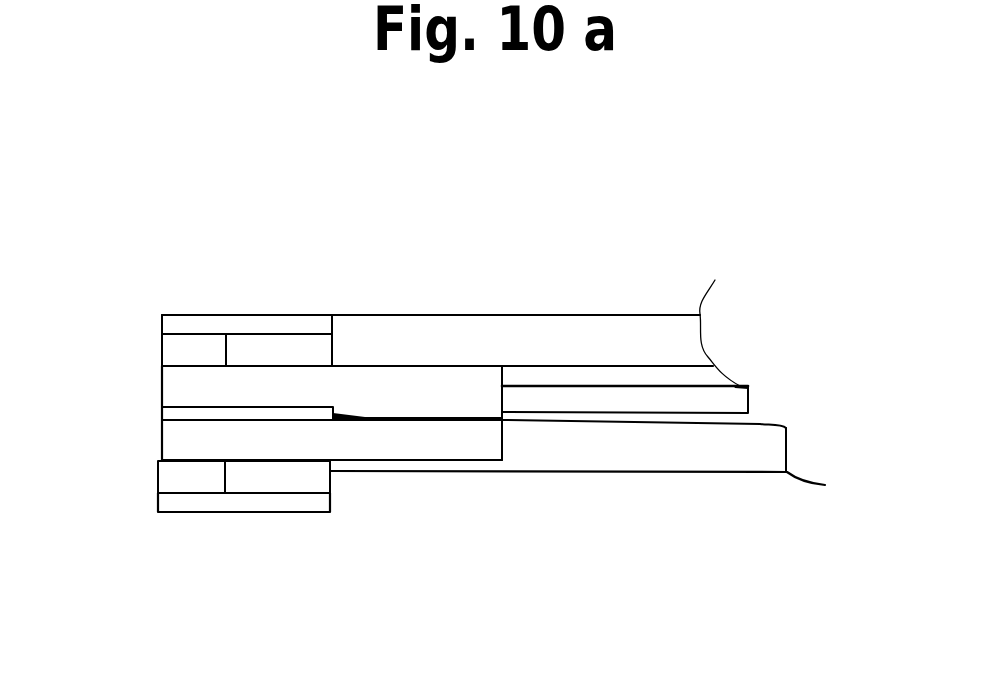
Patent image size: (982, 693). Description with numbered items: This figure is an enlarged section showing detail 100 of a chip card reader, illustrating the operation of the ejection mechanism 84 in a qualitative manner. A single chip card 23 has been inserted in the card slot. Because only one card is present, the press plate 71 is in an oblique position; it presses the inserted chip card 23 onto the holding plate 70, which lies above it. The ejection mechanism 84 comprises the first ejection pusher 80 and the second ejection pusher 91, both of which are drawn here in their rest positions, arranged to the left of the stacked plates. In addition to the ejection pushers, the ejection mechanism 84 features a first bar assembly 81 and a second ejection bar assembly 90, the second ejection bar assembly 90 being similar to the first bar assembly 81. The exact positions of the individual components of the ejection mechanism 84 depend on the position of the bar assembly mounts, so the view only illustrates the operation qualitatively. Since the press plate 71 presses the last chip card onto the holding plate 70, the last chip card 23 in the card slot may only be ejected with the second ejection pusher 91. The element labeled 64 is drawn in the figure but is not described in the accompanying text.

The detail 100 is at (547, 302).
The holding plate 70 is at (642, 336).
The press plate 71 is at (678, 455).
The ejection mechanism 84 is at (272, 325).
The second ejection bar assembly 90 is at (250, 353).
The second ejection pusher 91 is at (172, 393).
The first ejection pusher 80 is at (170, 437).
The first bar assembly 81 is at (248, 480).
The lower block layer 64 is at (268, 508).
The chip card 23 is at (717, 398).